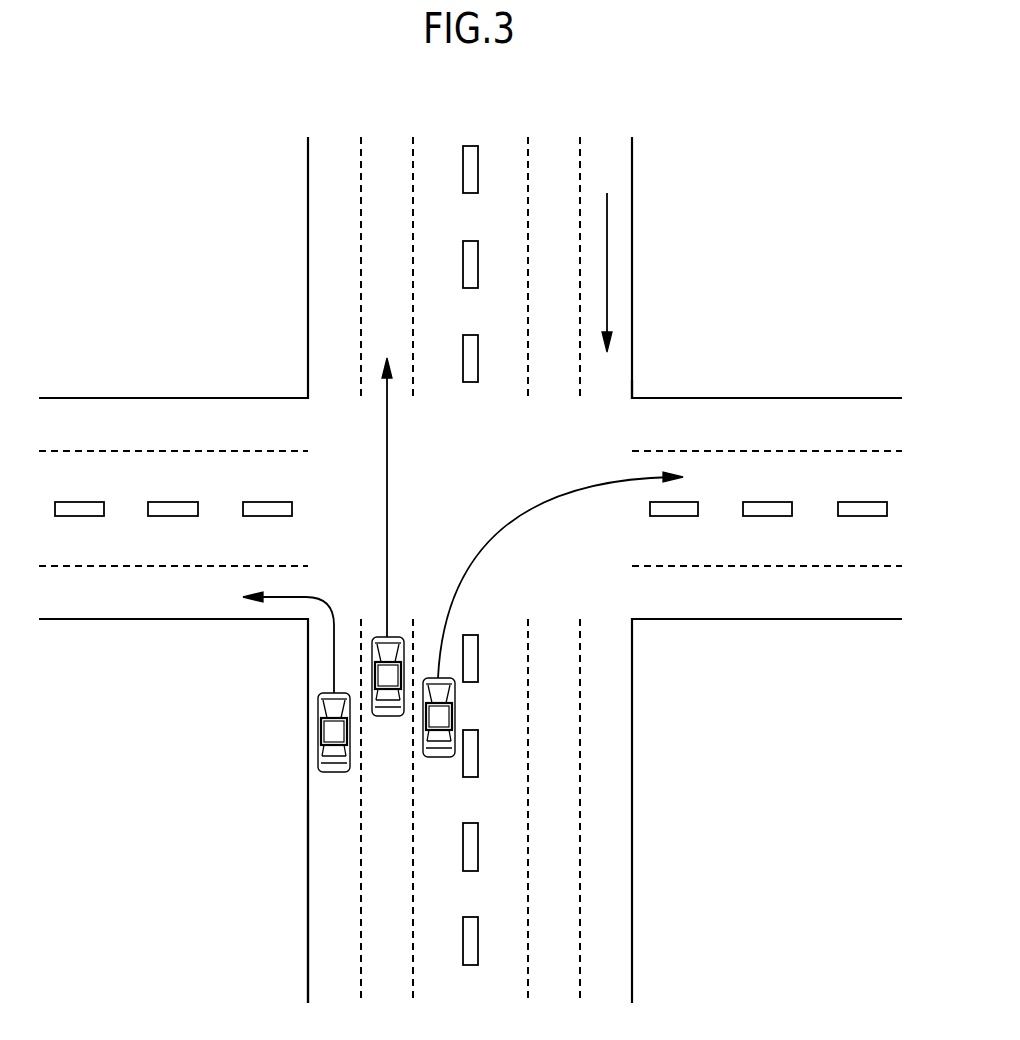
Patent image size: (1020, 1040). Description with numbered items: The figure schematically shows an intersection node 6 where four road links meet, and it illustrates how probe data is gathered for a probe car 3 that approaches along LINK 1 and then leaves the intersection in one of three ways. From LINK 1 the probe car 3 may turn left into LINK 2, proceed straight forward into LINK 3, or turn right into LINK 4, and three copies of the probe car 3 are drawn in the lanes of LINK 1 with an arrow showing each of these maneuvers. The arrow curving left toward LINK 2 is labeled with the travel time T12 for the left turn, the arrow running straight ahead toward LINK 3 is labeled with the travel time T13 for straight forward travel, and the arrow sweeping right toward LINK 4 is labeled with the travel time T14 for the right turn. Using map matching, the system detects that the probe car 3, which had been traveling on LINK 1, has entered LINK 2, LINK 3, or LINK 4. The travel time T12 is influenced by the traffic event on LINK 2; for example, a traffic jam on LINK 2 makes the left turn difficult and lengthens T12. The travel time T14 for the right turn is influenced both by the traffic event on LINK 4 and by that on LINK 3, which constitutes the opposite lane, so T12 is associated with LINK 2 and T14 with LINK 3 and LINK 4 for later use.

The probe car 3 is at (336, 772).
The intersection node 6 is at (625, 420).
The travel time in the case of the left turn T12 is at (310, 592).
The travel time in the case of straight forward travel T13 is at (388, 458).
The travel time in the case of the right turn T14 is at (500, 527).
The link 1 LINK 1 is at (308, 828).
The link 2 LINK 2 is at (145, 620).
The link 3 LINK 3 is at (633, 238).
The link 4 LINK 4 is at (793, 397).